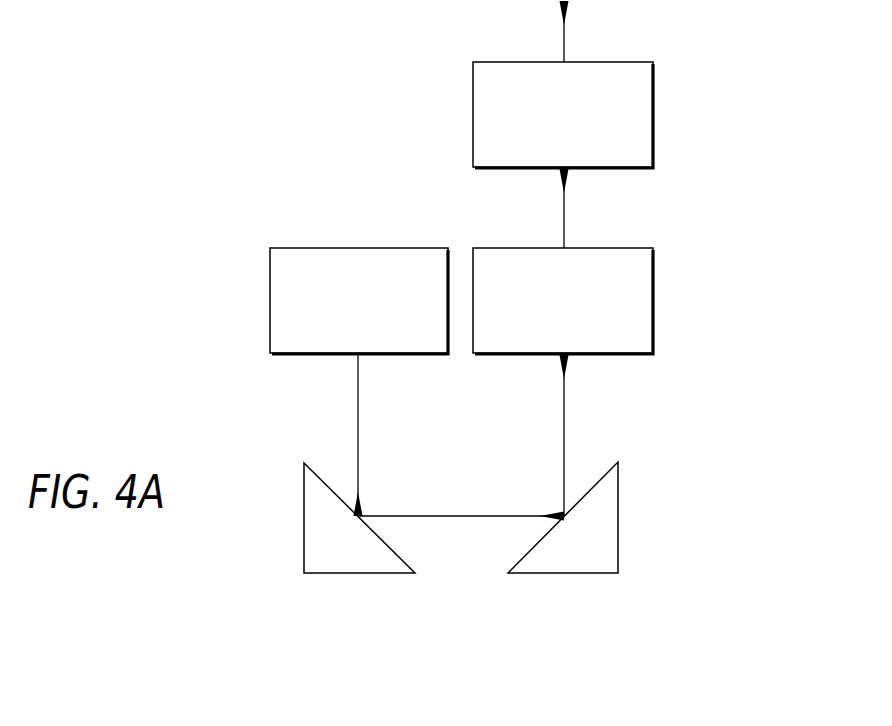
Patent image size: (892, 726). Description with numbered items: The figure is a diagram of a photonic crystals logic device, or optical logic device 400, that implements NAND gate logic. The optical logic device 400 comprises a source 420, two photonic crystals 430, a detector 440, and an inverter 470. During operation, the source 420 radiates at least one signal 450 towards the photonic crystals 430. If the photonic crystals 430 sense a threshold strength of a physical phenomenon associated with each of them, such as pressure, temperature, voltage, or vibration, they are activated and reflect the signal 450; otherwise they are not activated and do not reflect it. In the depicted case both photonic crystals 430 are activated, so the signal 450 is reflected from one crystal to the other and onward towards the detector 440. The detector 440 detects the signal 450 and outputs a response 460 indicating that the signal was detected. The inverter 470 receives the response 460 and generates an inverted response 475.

The optical logic device 400 is at (232, 125).
The source 420 is at (300, 248).
The photonic crystals 430 is at (358, 573).
The detector 440 is at (653, 300).
The signal 450 is at (358, 430).
The response 460 is at (564, 224).
The inverter 470 is at (653, 115).
The inverted response 475 is at (564, 38).